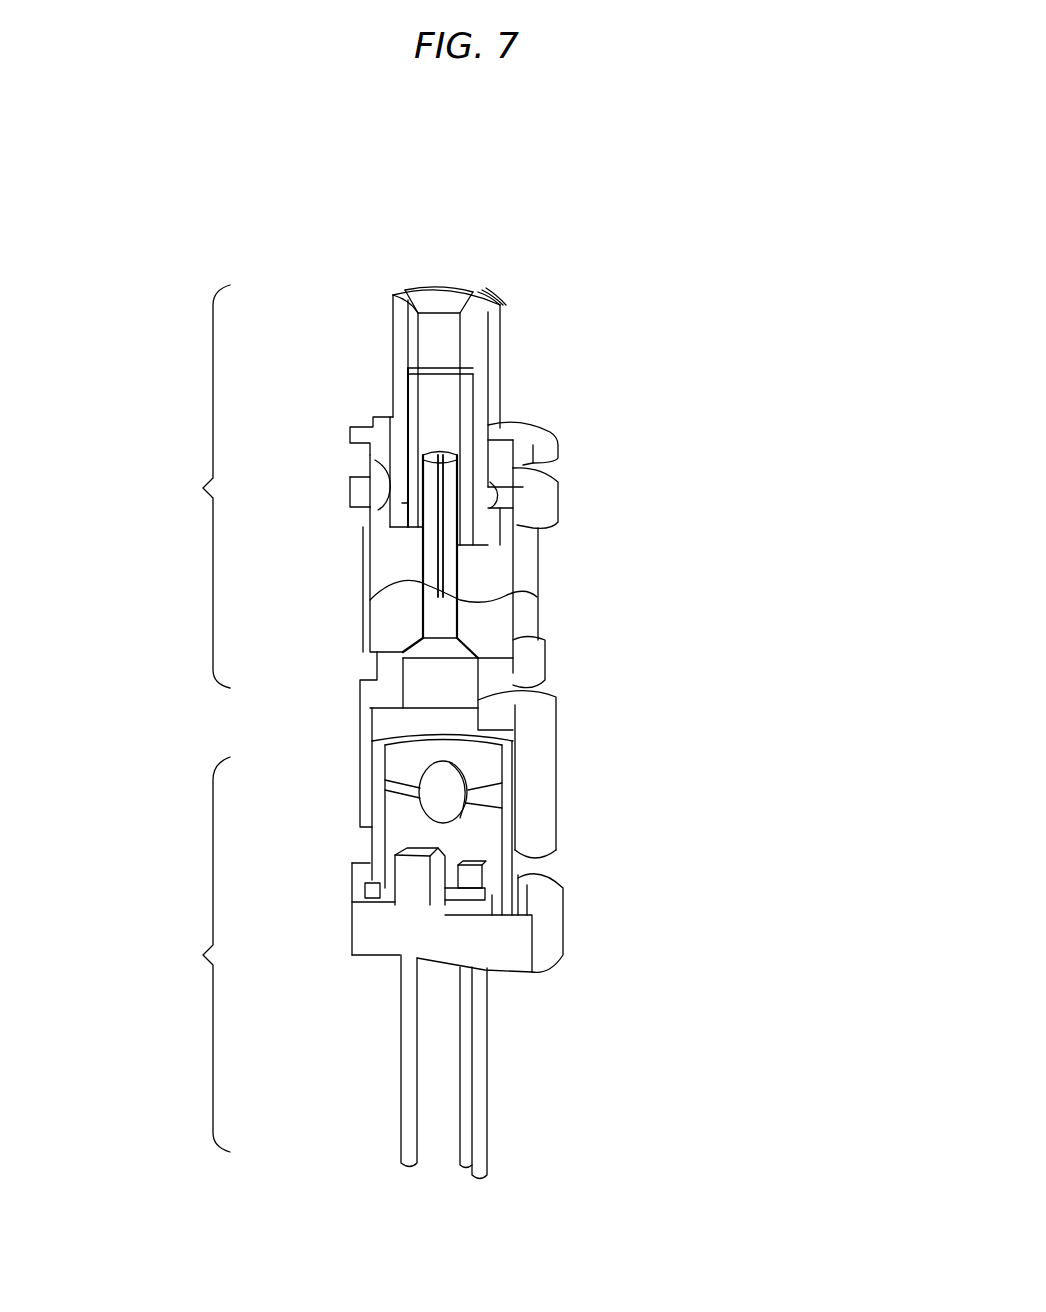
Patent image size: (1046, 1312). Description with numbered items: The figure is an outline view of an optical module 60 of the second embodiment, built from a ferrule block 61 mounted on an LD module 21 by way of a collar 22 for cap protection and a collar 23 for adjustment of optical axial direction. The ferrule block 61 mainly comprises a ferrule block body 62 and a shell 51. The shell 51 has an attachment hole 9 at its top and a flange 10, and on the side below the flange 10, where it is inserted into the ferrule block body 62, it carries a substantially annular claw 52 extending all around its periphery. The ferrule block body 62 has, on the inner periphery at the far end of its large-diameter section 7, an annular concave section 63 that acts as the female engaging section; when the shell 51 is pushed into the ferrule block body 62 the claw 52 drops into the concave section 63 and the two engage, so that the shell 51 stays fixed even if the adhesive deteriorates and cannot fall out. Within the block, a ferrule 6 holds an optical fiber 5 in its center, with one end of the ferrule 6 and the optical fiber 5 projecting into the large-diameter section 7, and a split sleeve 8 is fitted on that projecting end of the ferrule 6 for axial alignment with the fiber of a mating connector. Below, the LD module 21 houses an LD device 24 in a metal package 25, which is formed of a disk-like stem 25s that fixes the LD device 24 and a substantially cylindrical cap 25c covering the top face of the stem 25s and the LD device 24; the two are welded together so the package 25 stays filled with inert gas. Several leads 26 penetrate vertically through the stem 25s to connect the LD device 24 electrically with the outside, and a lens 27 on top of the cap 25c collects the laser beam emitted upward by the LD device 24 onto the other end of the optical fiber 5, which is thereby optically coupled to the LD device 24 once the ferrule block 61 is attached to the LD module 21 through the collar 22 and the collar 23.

The optical module 60 is at (656, 272).
The attachment hole 9 is at (445, 300).
The shell 51 is at (502, 340).
The sleeve 8 is at (463, 400).
The flange 10 is at (524, 430).
The claw 52 is at (392, 462).
The concave section 63 is at (561, 495).
The ferrule block body 62 is at (540, 557).
The large-diameter section 7 is at (402, 503).
The ferrule 6 is at (376, 610).
The optical fiber 5 is at (537, 597).
The ferrule block 61 is at (157, 486).
The lens 27 is at (438, 774).
The collar for adjustment of optical axial direction 23 is at (551, 740).
The cap 25c is at (556, 868).
The collar for cap protection 22 is at (563, 906).
The LD device 24 is at (432, 874).
The stem 25s is at (557, 953).
The package 25 is at (546, 970).
The lead 26 is at (488, 1130).
The LD module 21 is at (150, 954).